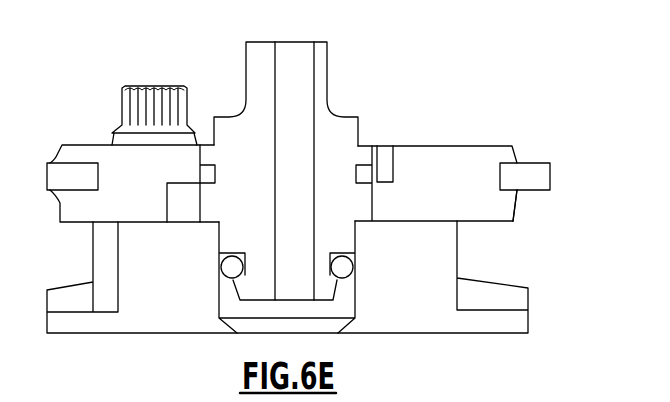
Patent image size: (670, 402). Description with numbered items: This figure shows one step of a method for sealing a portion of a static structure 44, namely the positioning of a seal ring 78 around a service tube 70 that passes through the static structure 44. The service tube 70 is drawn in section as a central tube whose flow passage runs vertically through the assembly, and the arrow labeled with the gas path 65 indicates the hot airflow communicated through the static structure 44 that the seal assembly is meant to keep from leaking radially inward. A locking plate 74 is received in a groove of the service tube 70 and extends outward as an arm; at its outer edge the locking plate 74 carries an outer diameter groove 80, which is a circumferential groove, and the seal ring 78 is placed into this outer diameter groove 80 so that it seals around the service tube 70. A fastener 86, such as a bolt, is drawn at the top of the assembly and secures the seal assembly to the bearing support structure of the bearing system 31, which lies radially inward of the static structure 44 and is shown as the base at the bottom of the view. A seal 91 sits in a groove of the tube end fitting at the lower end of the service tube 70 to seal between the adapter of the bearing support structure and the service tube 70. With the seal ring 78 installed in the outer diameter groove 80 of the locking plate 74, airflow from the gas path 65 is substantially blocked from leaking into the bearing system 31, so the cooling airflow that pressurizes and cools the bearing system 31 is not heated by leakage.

The static structure 44 is at (578, 120).
The bearing system 31 is at (473, 296).
The gas path 65 is at (203, 67).
The service tube 70 is at (302, 78).
The locking plate 74 is at (419, 130).
The seal ring 78 is at (540, 175).
The outer diameter groove 80 is at (507, 200).
The fastener 86 is at (135, 106).
The seal 91 is at (354, 270).